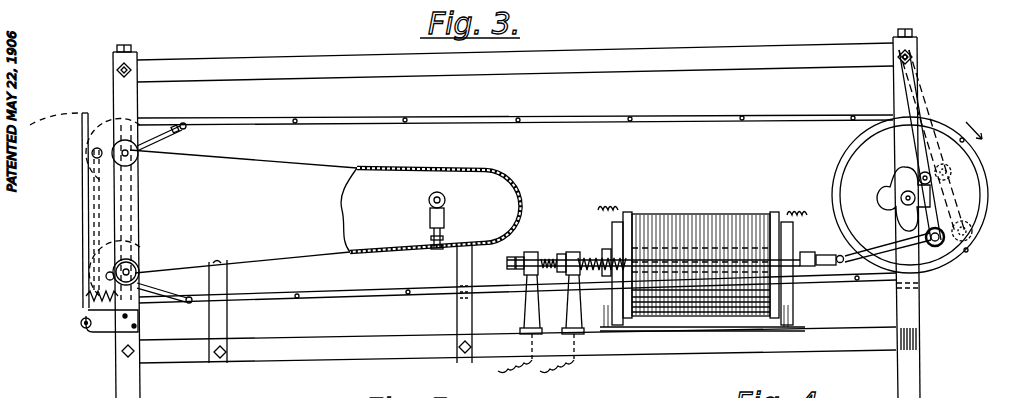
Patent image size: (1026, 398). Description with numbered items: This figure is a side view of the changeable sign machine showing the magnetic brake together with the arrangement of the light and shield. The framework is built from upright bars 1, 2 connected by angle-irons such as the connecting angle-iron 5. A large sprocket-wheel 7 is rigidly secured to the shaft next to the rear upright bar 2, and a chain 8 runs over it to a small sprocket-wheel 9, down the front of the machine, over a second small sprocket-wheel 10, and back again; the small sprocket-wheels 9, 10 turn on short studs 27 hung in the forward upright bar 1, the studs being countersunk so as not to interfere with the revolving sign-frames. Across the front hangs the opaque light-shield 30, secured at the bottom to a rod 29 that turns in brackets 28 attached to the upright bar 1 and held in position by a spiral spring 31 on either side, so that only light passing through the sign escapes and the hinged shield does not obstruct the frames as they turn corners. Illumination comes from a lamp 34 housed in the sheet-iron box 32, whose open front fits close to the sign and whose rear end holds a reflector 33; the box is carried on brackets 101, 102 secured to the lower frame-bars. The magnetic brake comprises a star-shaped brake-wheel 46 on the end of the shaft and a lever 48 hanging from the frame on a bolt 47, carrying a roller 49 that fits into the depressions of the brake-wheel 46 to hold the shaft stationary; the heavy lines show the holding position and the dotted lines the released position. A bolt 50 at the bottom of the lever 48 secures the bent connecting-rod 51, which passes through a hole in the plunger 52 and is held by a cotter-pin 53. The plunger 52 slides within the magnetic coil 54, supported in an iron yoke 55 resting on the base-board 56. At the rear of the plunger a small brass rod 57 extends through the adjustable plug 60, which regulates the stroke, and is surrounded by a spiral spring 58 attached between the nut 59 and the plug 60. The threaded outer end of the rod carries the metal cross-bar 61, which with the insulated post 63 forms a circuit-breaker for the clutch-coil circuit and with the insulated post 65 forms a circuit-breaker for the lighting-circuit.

The upright bar 1 is at (126, 221).
The upright bar 2 is at (910, 306).
The connecting angle-iron 5 is at (509, 203).
The sprocket-wheel 7 is at (910, 195).
The chain 8 is at (516, 200).
The small sprocket-wheel 9 is at (151, 150).
The small sprocket-wheel 10 is at (140, 269).
The stud 27 is at (133, 160).
The bracket 28 is at (101, 333).
The rod 29 is at (83, 328).
The light-shield 30 is at (83, 216).
The spiral spring 31 is at (86, 294).
The sheet-iron box 32 is at (412, 210).
The reflector 33 is at (435, 210).
The lamp 34 is at (430, 220).
The brake-wheel 46 is at (882, 202).
The bolt 47 is at (914, 57).
The lever 48 is at (920, 108).
The roller 49 is at (933, 184).
The bolt 50 is at (942, 246).
The connecting-rod 51 is at (878, 254).
The plunger 52 is at (823, 254).
The cotter-pin 53 is at (842, 266).
The magnetic coil 54 is at (701, 255).
The iron yoke 55 is at (620, 212).
The base-board 56 is at (702, 288).
The brass rod 57 is at (588, 257).
The spiral spring 58 is at (586, 256).
The nut 59 is at (562, 252).
The adjustable plug 60 is at (606, 250).
The cross-bar 61 is at (531, 252).
The insulated metal post 63 is at (577, 308).
The insulated metal post 65 is at (534, 308).
The bracket 101 is at (228, 318).
The bracket 102 is at (473, 313).